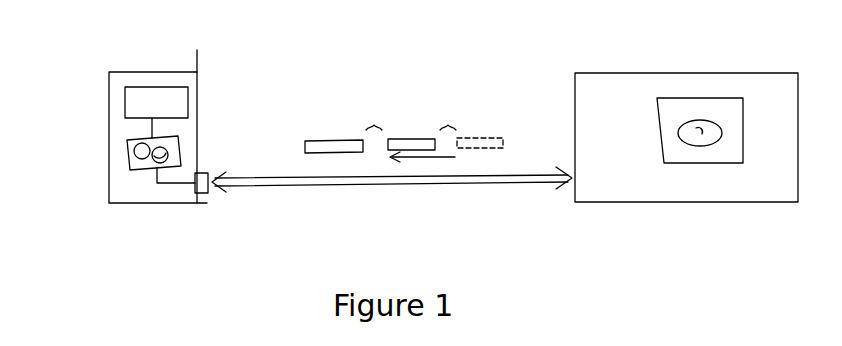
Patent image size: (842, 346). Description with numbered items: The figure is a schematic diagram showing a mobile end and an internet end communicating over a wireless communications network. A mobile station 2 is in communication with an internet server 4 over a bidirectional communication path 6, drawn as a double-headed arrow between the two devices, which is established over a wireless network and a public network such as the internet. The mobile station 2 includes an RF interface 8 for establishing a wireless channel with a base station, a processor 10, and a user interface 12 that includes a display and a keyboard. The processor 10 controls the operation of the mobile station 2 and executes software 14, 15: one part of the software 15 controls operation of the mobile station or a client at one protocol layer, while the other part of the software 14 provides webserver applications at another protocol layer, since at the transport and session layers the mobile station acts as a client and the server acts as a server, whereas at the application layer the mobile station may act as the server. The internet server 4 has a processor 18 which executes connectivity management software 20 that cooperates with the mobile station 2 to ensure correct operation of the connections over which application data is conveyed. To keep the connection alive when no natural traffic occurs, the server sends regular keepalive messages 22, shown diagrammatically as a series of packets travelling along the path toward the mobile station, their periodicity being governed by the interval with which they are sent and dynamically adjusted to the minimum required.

The mobile station 2 is at (123, 193).
The internet server 4 is at (772, 188).
The bidirectional communication path 6 is at (457, 190).
The RF interface 8 is at (216, 203).
The processor 10 is at (125, 153).
The user interface 12 is at (122, 94).
The software 14 is at (183, 154).
The software 15 is at (130, 165).
The processor 18 is at (677, 115).
The connectivity management software 20 is at (703, 137).
The keepalive messages 22 is at (343, 140).